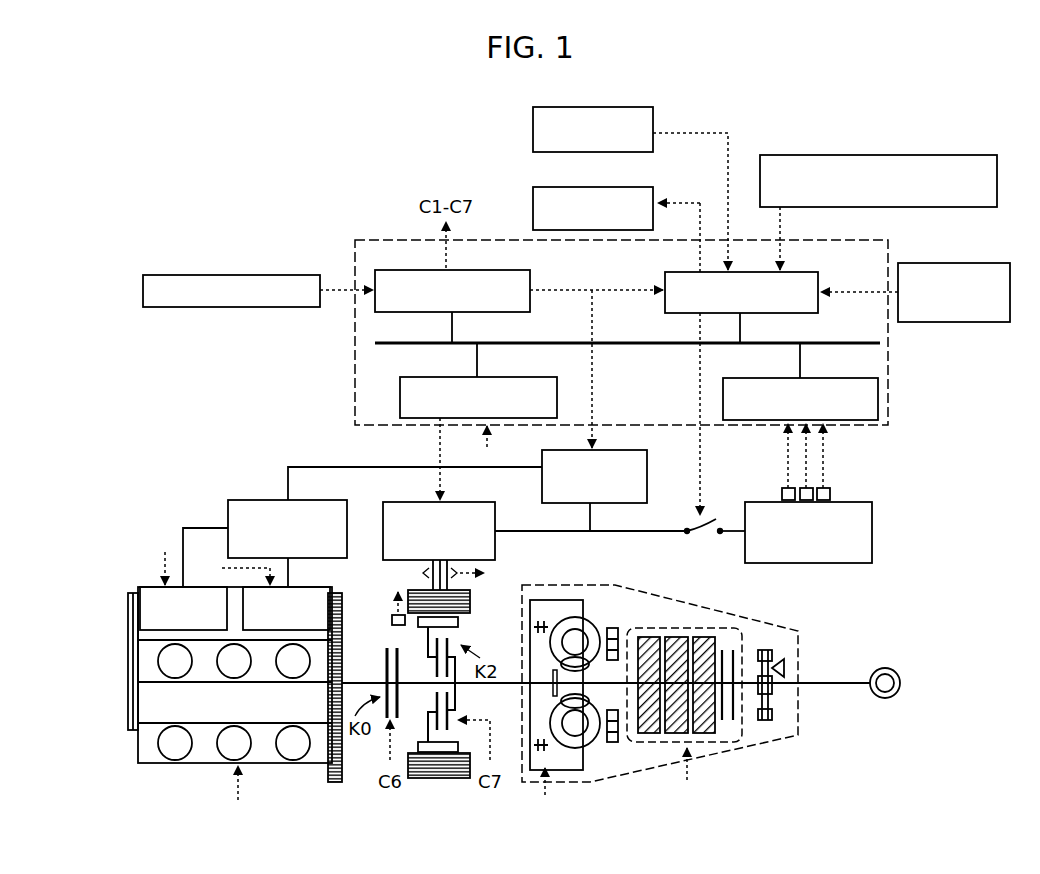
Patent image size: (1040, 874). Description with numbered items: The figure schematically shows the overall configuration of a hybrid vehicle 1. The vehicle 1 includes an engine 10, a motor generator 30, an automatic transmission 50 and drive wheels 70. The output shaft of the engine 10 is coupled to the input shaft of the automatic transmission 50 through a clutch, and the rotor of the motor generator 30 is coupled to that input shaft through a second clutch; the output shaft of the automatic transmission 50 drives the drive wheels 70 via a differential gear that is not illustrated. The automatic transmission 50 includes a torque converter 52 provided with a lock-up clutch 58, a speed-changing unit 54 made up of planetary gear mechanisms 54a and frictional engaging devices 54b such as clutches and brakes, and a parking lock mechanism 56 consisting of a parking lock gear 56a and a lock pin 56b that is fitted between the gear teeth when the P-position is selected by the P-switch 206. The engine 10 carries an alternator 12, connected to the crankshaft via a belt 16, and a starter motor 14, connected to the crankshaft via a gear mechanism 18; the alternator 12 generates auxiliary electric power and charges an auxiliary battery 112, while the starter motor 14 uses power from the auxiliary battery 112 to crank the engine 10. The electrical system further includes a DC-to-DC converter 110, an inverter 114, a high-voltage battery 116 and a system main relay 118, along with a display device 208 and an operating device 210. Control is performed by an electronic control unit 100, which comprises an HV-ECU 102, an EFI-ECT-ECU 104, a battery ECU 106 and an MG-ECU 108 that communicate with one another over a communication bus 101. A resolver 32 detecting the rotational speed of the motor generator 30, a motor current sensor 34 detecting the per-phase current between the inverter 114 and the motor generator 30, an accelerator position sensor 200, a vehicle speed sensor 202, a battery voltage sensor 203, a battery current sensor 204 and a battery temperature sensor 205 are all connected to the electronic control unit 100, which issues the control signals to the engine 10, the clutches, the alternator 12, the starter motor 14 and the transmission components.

The hybrid vehicle 1 is at (65, 219).
The engine 10 is at (138, 750).
The alternator 12 is at (141, 587).
The starter motor 14 is at (330, 587).
The belt 16 is at (128, 637).
The gear mechanism 18 is at (342, 782).
The motor generator 30 is at (473, 613).
The resolver 32 is at (390, 622).
The motor current sensor 34 is at (447, 568).
The automatic transmission 50 is at (589, 783).
The torque converter 52 is at (595, 614).
The speed-changing unit 54 is at (686, 699).
The planetary gear mechanisms 54a is at (655, 734).
The frictional engaging devices 54b is at (728, 722).
The parking lock mechanism 56 is at (799, 689).
The parking lock gear 56a is at (766, 650).
The lock pin 56b is at (785, 662).
The lock-up clutch 58 is at (541, 617).
The drive wheels 70 is at (889, 671).
The electronic control unit 100 is at (815, 240).
The communication bus 101 is at (828, 343).
The HV-ECU 102 is at (798, 272).
The EFI-ECT-ECU 104 is at (475, 270).
The battery ECU 106 is at (828, 378).
The MG-ECU 108 is at (495, 377).
The DC-to-DC converter 110 is at (605, 450).
The auxiliary battery 112 is at (245, 500).
The inverter 114 is at (448, 502).
The high-voltage battery 116 is at (842, 502).
The system main relay 118 is at (720, 512).
The accelerator position sensor 200 is at (948, 155).
The vehicle speed sensor 202 is at (958, 263).
The battery voltage sensor 203 is at (786, 487).
The battery current sensor 204 is at (808, 487).
The battery temperature sensor 205 is at (825, 487).
The P-switch 206 is at (286, 273).
The display device 208 is at (608, 188).
The operating device 210 is at (608, 108).